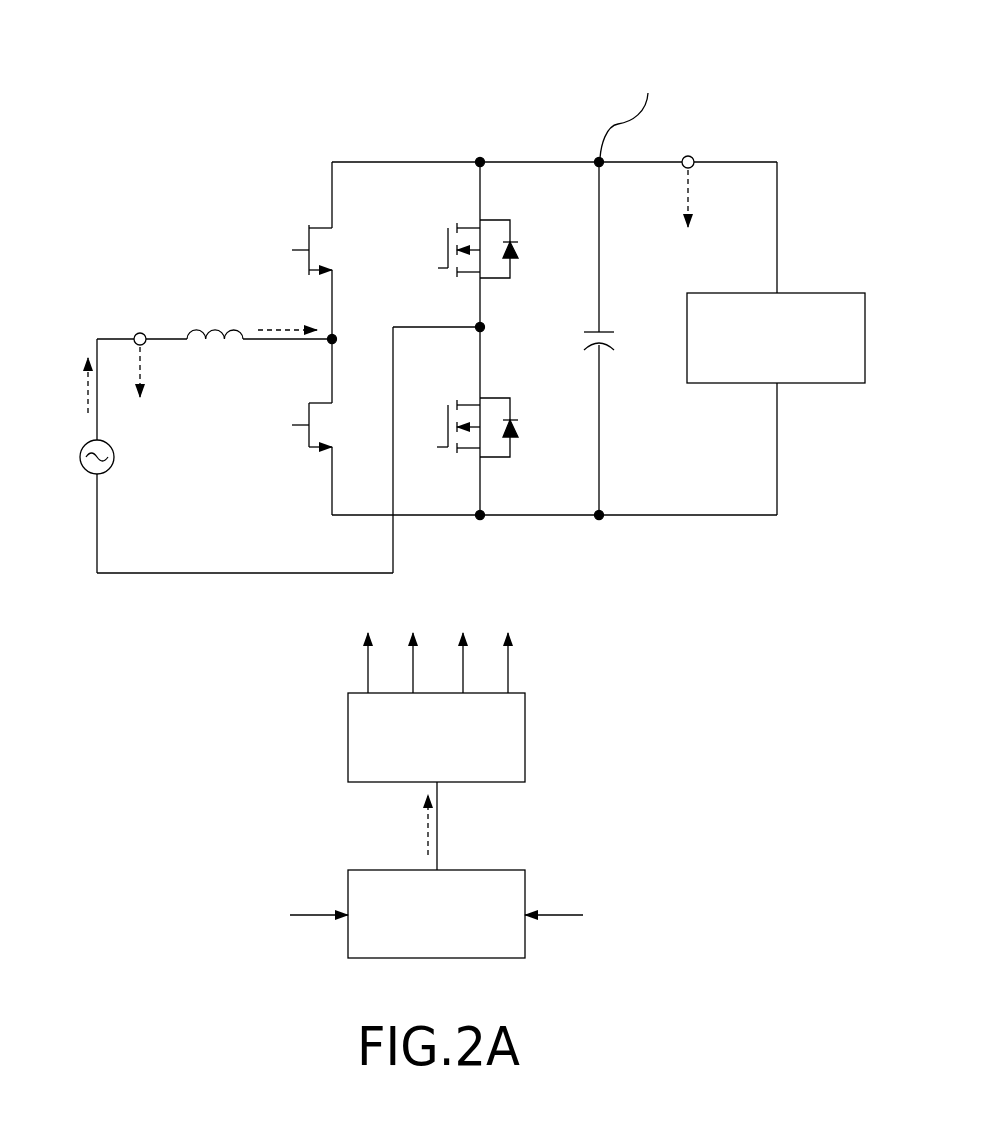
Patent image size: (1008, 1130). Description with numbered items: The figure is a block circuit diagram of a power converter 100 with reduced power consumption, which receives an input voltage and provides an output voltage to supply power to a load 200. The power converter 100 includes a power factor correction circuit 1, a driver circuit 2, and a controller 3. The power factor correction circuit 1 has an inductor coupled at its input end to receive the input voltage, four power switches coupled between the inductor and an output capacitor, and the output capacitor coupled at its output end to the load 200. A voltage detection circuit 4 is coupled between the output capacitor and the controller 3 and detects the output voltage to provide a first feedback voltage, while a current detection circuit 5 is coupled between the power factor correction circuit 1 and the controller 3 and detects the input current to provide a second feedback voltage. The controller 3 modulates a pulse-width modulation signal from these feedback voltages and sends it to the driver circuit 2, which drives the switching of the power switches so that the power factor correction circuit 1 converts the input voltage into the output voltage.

The power converter 100 is at (457, 32).
The power factor correction circuit 1 is at (582, 553).
The driver circuit 2 is at (520, 737).
The controller 3 is at (448, 877).
The voltage detection circuit 4 is at (688, 156).
The current detection circuit 5 is at (137, 333).
The load 200 is at (787, 302).